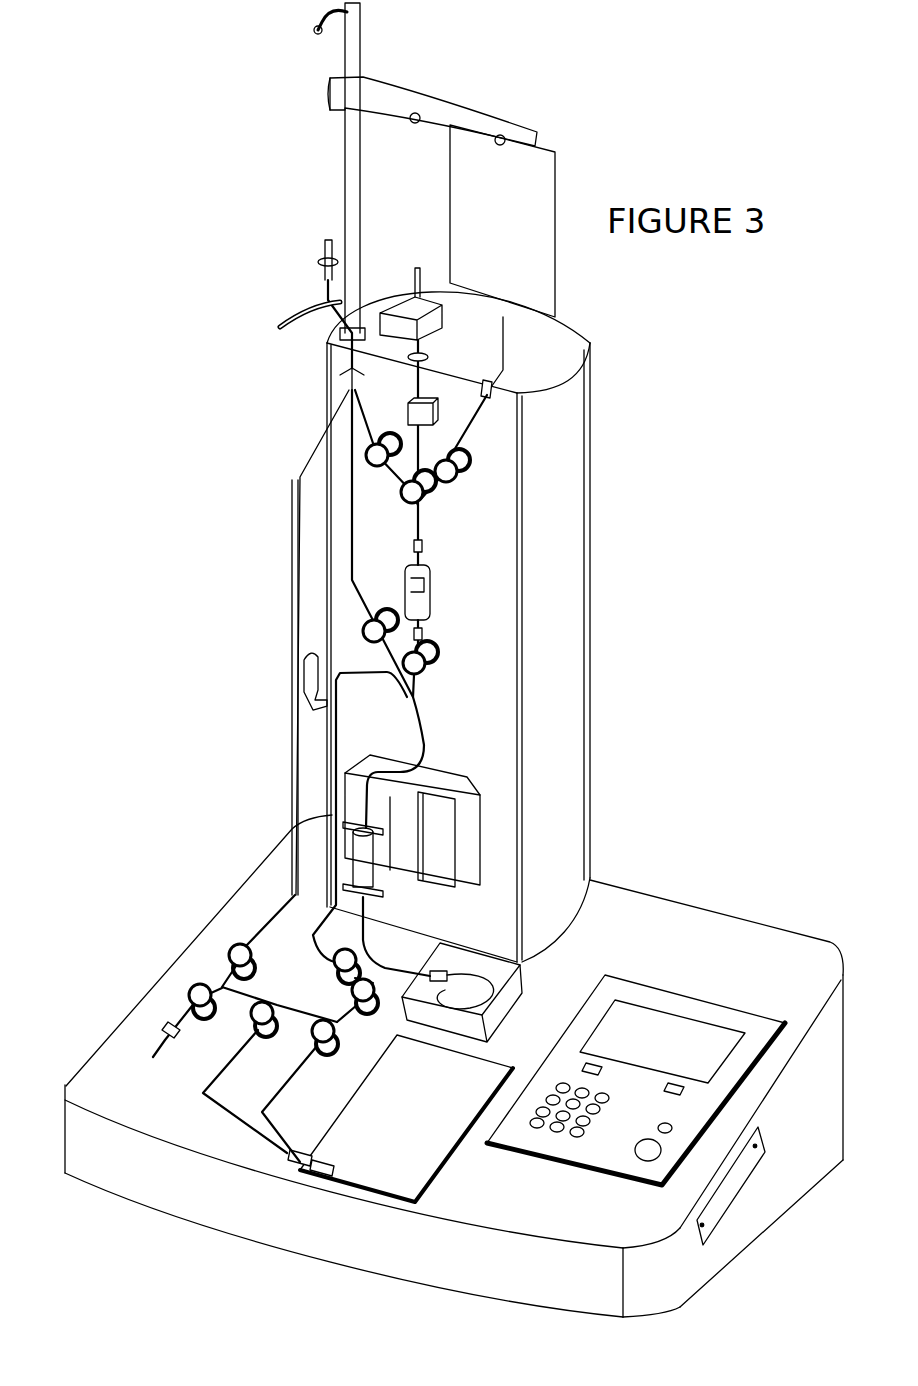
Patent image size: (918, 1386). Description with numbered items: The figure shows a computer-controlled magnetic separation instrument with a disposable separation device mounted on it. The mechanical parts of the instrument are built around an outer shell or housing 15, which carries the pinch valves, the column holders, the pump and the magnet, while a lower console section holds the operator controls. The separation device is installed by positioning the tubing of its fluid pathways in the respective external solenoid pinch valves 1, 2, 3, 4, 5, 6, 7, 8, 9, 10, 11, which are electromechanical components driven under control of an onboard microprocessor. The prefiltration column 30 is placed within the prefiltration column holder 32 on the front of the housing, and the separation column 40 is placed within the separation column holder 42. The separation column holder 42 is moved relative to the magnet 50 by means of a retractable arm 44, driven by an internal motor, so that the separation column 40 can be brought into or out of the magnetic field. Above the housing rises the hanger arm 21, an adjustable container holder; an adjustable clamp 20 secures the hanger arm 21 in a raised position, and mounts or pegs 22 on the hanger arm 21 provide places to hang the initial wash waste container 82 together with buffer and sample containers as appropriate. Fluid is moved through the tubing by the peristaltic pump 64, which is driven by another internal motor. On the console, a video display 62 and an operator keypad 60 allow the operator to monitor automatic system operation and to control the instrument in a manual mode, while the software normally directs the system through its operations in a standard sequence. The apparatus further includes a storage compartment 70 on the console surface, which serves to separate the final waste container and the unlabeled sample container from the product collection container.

The solenoid pinch valve 1 is at (378, 467).
The solenoid pinch valve 2 is at (422, 503).
The solenoid pinch valve 3 is at (450, 478).
The solenoid pinch valve 4 is at (366, 637).
The solenoid pinch valve 5 is at (431, 659).
The solenoid pinch valve 6 is at (238, 947).
The solenoid pinch valve 7 is at (353, 952).
The solenoid pinch valve 8 is at (351, 996).
The solenoid pinch valve 9 is at (186, 1003).
The solenoid pinch valve 10 is at (252, 1016).
The solenoid pinch valve 11 is at (315, 1041).
The housing 15 is at (458, 627).
The adjustable clamp 20 is at (305, 668).
The hanger arm 21 is at (352, 204).
The pegs 22 is at (317, 29).
The prefiltration column 30 is at (425, 613).
The prefiltration column holder 32 is at (429, 591).
The separation column 40 is at (364, 864).
The separation column holder 42 is at (382, 859).
The retractable arm 44 is at (416, 782).
The magnet 50 is at (473, 818).
The operator keypad 60 is at (636, 1080).
The video display 62 is at (662, 1041).
The peristaltic pump 64 is at (515, 987).
The storage compartment 70 is at (400, 1118).
The initial wash waste container 82 is at (501, 293).